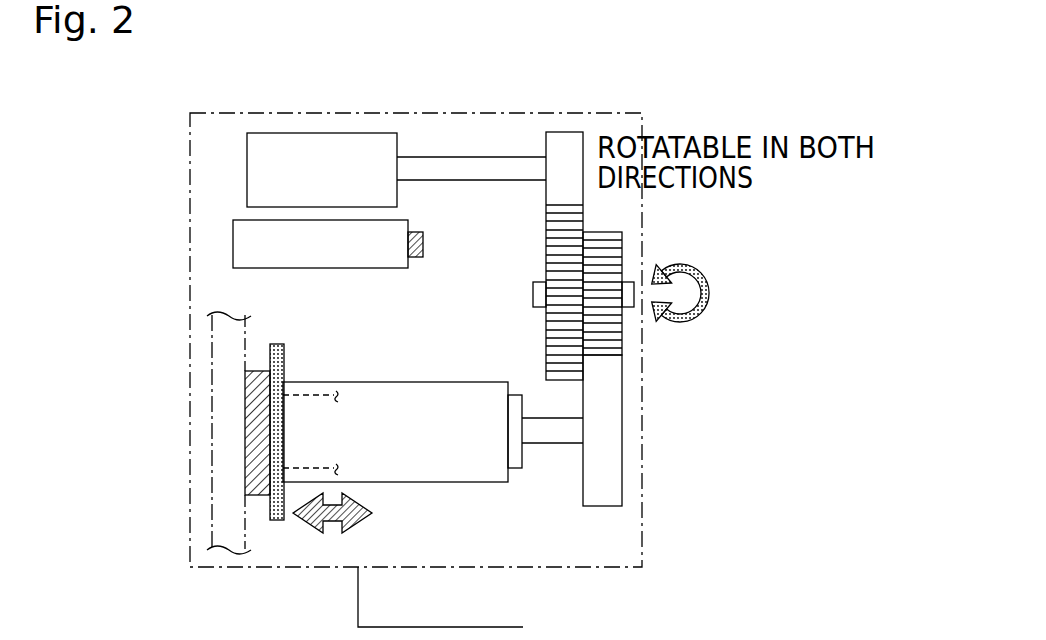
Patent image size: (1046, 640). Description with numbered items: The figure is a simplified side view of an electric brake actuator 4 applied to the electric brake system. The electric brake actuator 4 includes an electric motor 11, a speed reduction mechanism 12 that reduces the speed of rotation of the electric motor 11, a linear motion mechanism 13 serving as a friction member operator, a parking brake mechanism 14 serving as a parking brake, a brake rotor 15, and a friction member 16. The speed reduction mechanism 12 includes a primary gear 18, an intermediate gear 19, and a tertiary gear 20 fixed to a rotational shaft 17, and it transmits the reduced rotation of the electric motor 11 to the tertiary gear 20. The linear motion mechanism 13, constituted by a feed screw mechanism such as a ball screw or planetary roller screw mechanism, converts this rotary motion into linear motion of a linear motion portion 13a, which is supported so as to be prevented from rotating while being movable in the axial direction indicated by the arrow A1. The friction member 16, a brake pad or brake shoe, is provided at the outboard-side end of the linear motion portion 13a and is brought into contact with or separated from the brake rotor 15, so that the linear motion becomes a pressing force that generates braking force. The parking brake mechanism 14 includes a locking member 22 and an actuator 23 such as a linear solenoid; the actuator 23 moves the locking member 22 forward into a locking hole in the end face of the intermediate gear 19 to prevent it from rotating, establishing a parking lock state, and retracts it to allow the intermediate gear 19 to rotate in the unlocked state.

The electric brake actuator 4 is at (190, 183).
The electric motor 11 is at (325, 133).
The speed reduction mechanism 12 is at (631, 343).
The linear motion mechanism 13 is at (477, 475).
The linear motion portion 13a is at (283, 395).
The parking brake mechanism 14 is at (221, 242).
The brake rotor 15 is at (226, 338).
The friction member 16 is at (255, 487).
The rotational shaft 17 is at (556, 436).
The primary gear 18 is at (575, 133).
The intermediate gear 19 is at (568, 231).
The tertiary gear 20 is at (617, 440).
The locking member 22 is at (413, 258).
The actuator 23 is at (319, 268).
The axial direction arrow A1 is at (372, 513).